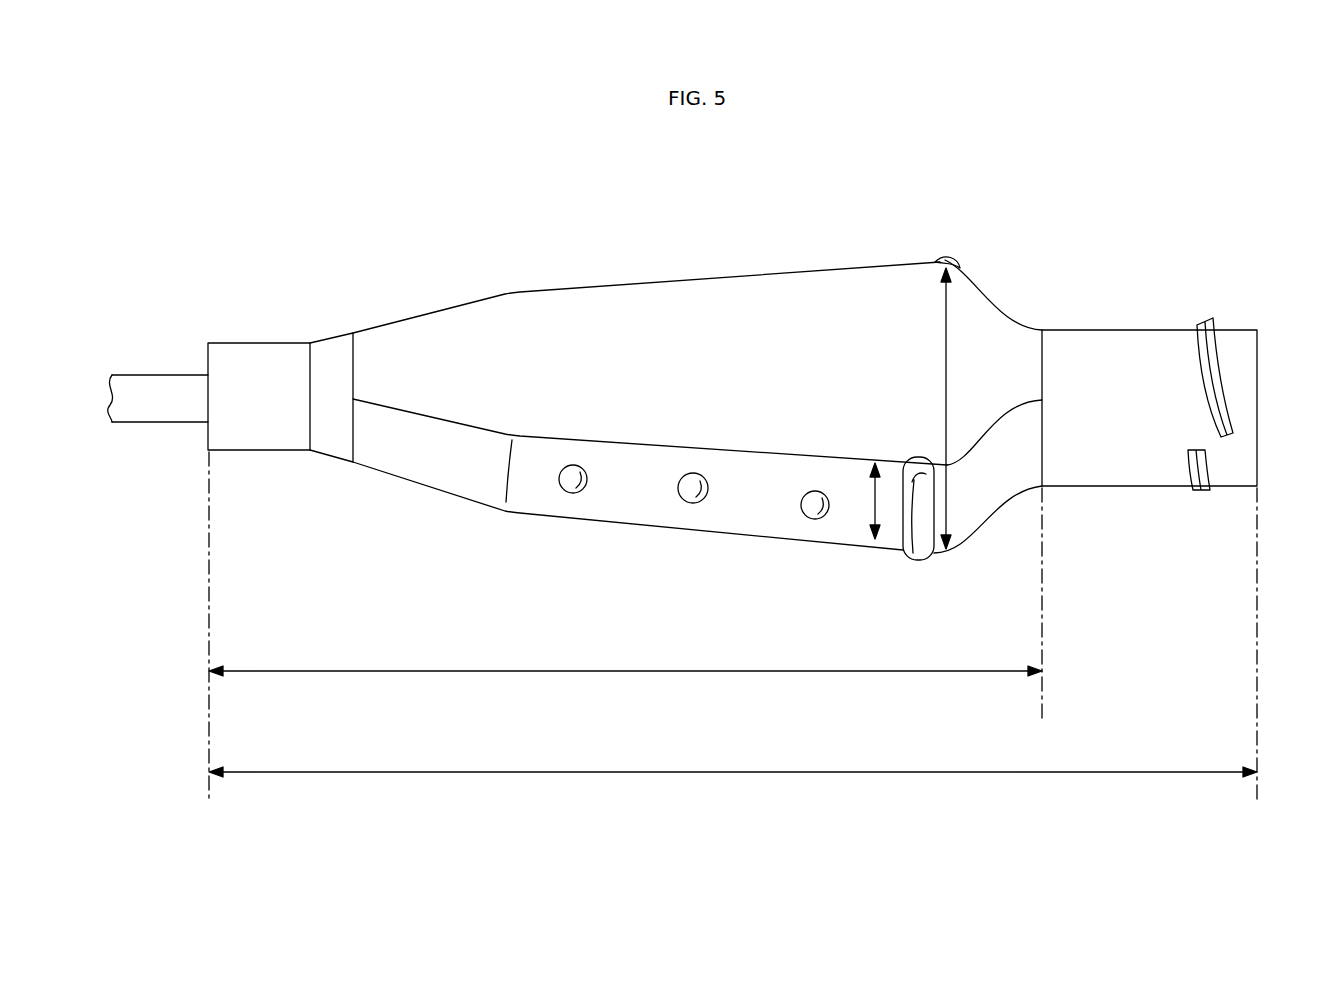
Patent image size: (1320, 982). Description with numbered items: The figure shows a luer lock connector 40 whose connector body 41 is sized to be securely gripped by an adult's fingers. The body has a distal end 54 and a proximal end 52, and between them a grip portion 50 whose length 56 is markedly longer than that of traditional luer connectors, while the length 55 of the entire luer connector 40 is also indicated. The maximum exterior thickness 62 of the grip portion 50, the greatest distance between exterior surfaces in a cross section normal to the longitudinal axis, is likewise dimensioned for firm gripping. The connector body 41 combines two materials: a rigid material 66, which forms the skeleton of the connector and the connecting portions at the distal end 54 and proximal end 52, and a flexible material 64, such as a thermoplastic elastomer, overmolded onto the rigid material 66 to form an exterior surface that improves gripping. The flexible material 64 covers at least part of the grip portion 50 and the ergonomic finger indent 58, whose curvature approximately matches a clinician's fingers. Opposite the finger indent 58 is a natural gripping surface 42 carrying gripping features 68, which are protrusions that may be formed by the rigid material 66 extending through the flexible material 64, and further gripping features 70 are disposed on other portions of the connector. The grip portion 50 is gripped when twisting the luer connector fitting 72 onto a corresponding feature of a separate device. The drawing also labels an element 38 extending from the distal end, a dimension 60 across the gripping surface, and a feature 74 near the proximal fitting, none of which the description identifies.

The shaft 38 is at (160, 400).
The luer lock connector 40 is at (1026, 166).
The connector body 41 is at (778, 290).
The natural gripping surface 42 is at (645, 490).
The grip portion 50 is at (847, 290).
The proximal end 52 is at (1243, 488).
The distal end 54 is at (238, 440).
The length of the entire luer connector 55 is at (597, 774).
The length of the grip portion 56 is at (670, 673).
The ergonomic finger indent 58 is at (718, 280).
The height 60 is at (874, 502).
The maximum exterior thickness 62 is at (950, 390).
The flexible material 64 is at (428, 343).
The rigid material 66 is at (260, 362).
The gripping features 68 is at (572, 488).
The gripping features 70 is at (948, 258).
The luer connector fitting 72 is at (1130, 455).
The band 74 is at (1205, 318).